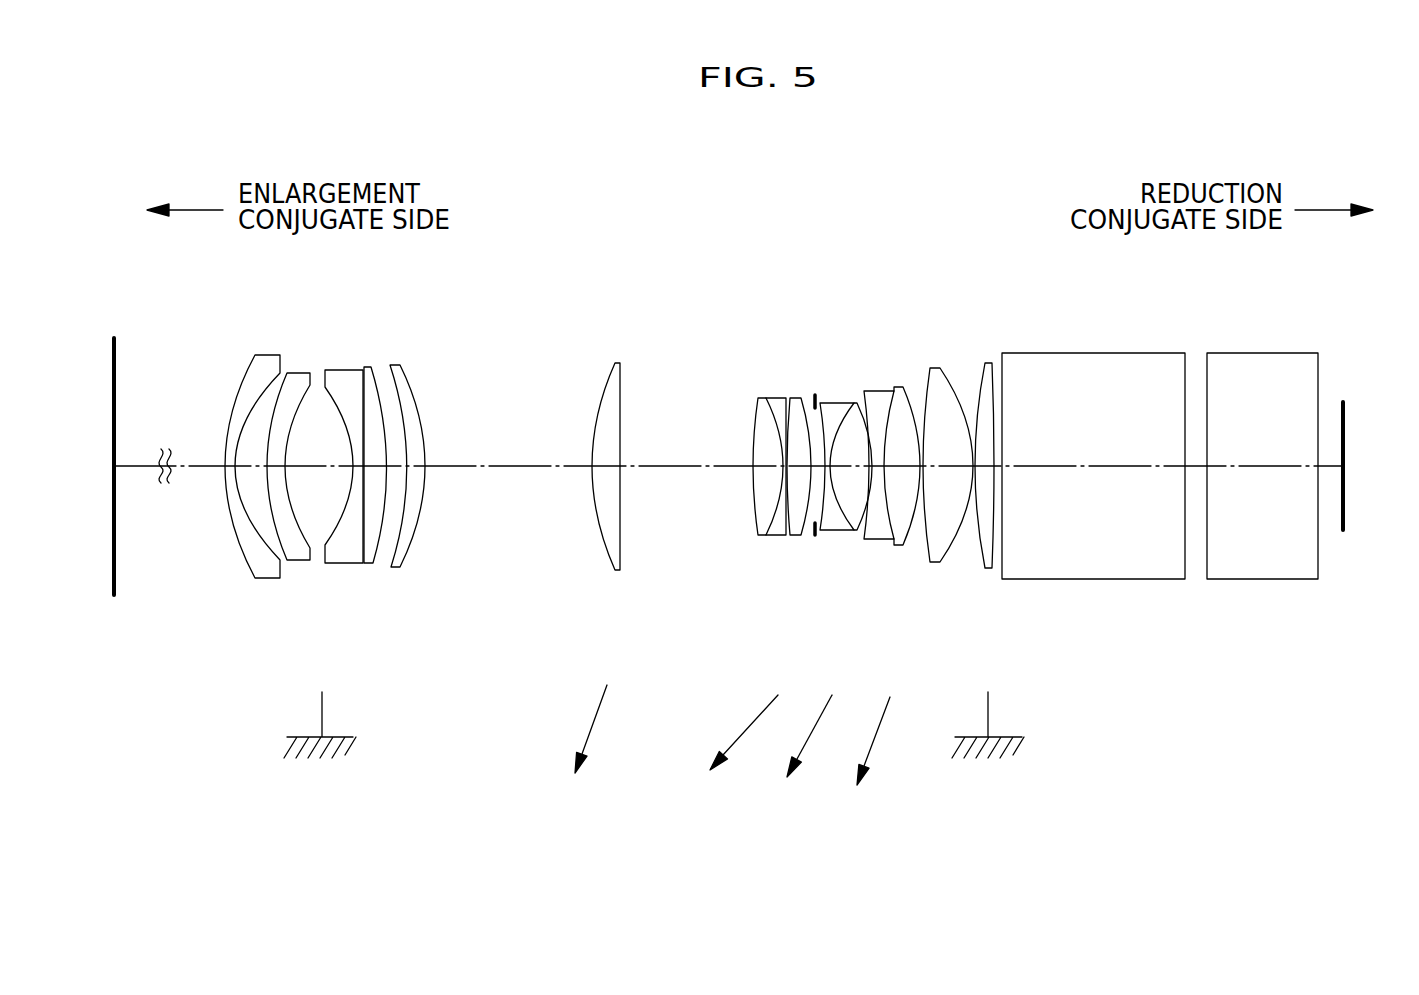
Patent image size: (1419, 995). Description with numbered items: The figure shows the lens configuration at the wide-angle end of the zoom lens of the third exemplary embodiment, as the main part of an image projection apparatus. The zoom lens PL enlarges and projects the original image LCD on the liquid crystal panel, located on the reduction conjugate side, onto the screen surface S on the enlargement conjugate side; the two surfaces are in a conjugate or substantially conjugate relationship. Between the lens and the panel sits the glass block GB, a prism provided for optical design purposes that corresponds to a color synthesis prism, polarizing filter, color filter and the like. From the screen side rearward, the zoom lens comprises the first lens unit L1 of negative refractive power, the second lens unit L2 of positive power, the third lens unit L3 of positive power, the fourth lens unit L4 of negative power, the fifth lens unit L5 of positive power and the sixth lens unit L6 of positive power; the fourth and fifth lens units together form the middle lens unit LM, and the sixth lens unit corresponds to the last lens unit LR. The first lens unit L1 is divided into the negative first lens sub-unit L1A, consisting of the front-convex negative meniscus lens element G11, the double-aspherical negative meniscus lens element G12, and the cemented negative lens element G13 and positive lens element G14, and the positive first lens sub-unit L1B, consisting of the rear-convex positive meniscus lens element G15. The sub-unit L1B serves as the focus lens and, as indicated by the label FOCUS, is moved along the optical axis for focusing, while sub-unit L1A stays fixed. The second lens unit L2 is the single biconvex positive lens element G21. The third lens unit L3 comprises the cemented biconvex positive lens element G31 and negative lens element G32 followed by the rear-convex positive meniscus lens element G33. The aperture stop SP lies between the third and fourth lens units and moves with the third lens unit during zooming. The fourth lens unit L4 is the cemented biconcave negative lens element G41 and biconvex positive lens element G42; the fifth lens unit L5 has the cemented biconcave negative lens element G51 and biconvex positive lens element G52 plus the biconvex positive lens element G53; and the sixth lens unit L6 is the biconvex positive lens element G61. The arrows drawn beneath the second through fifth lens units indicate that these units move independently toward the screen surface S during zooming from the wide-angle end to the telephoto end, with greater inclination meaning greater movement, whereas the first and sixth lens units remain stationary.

The screen surface S is at (117, 358).
The zoom lens PL is at (998, 285).
The first lens unit L1 is at (417, 630).
The first lens sub-unit L1A is at (383, 350).
The first lens sub-unit L1B is at (415, 350).
The focusing movement FOCUS is at (383, 577).
The negative lens element G11 is at (257, 565).
The negative lens element G12 is at (295, 553).
The negative lens element G13 is at (337, 553).
The positive lens element G14 is at (371, 550).
The positive lens element G15 is at (403, 550).
The second lens unit L2 is at (643, 605).
The positive lens element G21 is at (608, 530).
The third lens unit L3 is at (813, 550).
The positive lens element G31 is at (755, 405).
The negative lens element G32 is at (778, 397).
The positive lens element G33 is at (798, 395).
The aperture stop SP is at (815, 396).
The middle lens unit LM is at (973, 628).
The fourth lens unit L4 is at (867, 550).
The negative lens element G41 is at (828, 402).
The positive lens element G42 is at (855, 402).
The fifth lens unit L5 is at (967, 573).
The negative lens element G51 is at (877, 395).
The positive lens element G52 is at (903, 387).
The positive lens element G53 is at (940, 377).
The last lens unit LR is at (1013, 495).
The sixth lens unit L6 is at (975, 602).
The positive lens element G61 is at (980, 377).
The glass block GB is at (1242, 367).
The original image LCD is at (1345, 500).